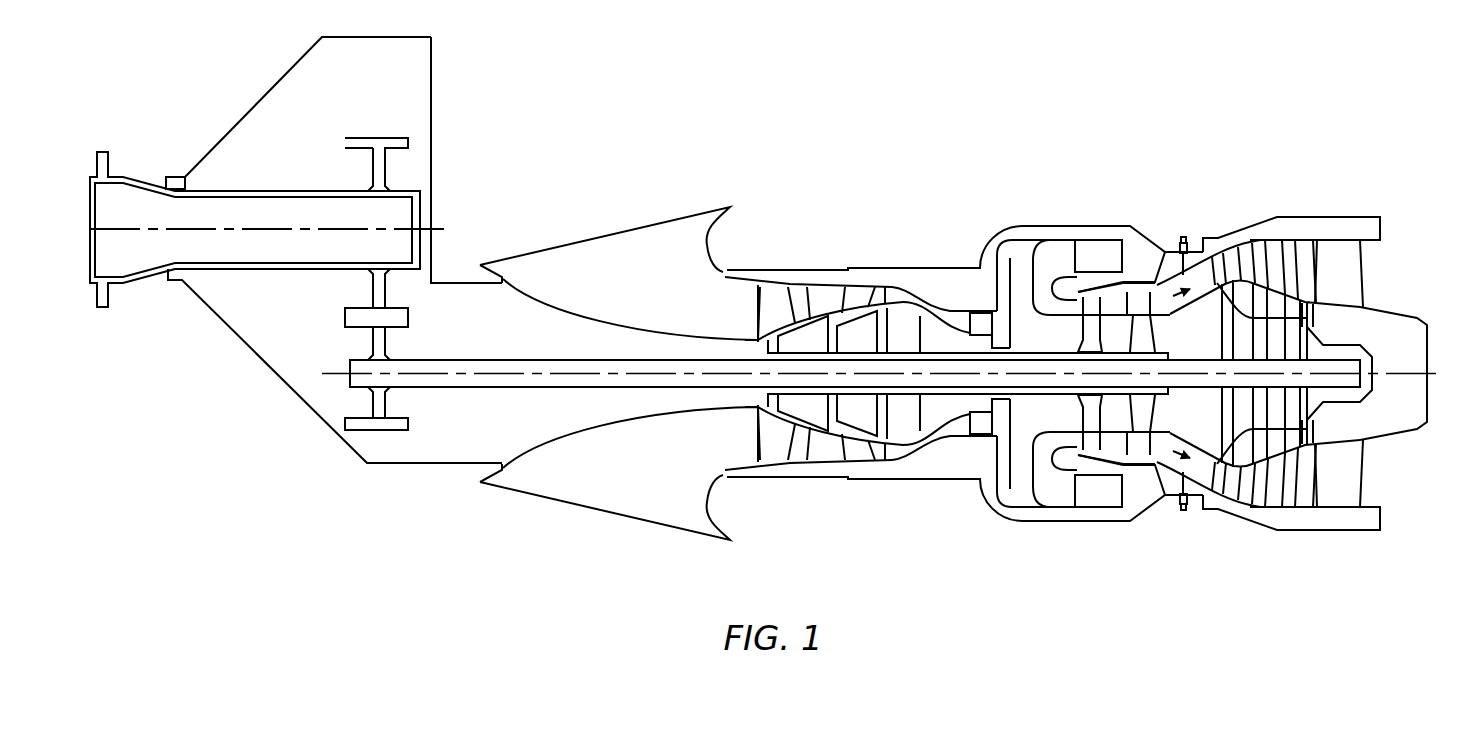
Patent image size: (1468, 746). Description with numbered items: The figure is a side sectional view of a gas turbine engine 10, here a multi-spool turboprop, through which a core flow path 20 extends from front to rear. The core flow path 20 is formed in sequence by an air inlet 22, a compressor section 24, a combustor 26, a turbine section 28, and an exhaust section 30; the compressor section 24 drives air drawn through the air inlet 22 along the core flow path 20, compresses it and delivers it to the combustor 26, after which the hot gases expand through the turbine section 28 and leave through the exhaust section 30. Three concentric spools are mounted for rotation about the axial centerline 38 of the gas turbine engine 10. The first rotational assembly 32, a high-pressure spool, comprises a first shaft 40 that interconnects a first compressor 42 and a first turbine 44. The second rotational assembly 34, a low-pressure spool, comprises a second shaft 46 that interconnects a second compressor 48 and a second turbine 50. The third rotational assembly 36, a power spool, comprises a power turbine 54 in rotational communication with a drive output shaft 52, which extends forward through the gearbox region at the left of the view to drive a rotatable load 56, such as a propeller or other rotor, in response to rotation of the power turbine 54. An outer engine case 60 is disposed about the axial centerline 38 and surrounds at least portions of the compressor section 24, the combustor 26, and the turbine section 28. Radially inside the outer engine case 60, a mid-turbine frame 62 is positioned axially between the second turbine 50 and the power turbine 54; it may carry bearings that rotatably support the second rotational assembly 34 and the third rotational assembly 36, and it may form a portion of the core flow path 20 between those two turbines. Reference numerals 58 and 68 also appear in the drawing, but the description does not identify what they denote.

The gas turbine engine 10 is at (1338, 130).
The core flow path 20 is at (1110, 300).
The air inlet 22 is at (604, 224).
The compressor section 24 is at (940, 258).
The combustor 26 is at (1093, 258).
The turbine section 28 is at (1254, 211).
The exhaust section 30 is at (1384, 275).
The first rotational assembly 32 is at (1033, 407).
The second rotational assembly 34 is at (907, 424).
The third rotational assembly 36 is at (1197, 420).
The axial centerline 38 is at (1412, 385).
The first shaft 40 is at (1002, 337).
The first compressor 42 is at (1002, 333).
The first turbine 44 is at (1080, 398).
The second shaft 46 is at (920, 357).
The second compressor 48 is at (833, 318).
The second turbine 50 is at (1147, 415).
The drive output shaft 52 is at (668, 380).
The power turbine 54 is at (1274, 442).
The rotatable load 56 is at (185, 177).
The gear 58 is at (340, 321).
The outer engine case 60 is at (1226, 237).
The mid-turbine frame 62 is at (1207, 283).
The fuel nozzle 68 is at (1183, 233).